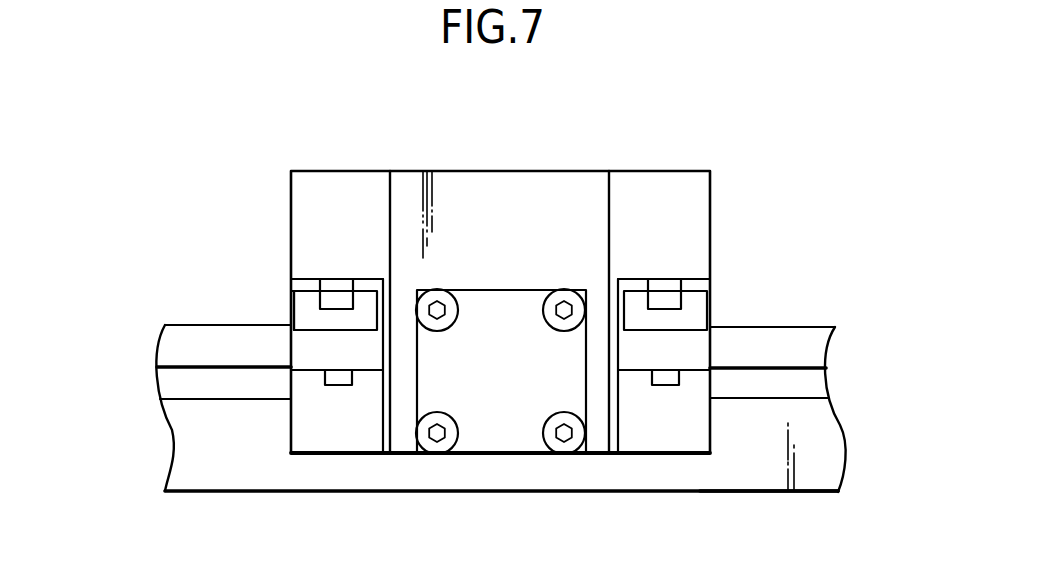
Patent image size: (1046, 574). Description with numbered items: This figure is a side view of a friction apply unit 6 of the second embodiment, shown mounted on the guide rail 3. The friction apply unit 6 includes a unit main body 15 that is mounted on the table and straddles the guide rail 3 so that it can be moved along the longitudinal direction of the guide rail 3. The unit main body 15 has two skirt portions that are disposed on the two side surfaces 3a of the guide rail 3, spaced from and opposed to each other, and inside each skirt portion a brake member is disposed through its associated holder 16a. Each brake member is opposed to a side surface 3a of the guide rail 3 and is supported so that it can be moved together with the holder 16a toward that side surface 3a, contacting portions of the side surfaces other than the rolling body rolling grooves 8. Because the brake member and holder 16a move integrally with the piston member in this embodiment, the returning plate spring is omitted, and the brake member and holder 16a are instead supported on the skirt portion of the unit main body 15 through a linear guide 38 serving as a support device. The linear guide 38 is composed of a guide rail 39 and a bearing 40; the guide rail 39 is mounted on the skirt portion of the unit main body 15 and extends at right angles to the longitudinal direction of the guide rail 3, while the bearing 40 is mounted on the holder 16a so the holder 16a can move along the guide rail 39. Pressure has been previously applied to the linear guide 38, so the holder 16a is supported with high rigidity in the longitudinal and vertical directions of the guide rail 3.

The guide rail 3 is at (482, 473).
The side surface 3a is at (748, 473).
The friction apply unit 6 is at (569, 157).
The rolling body rolling groove 8 is at (168, 384).
The unit main body 15 is at (468, 190).
The holder 16a is at (316, 358).
The linear guide 38 is at (283, 287).
The guide rail 39 is at (336, 288).
The bearing 40 is at (303, 302).